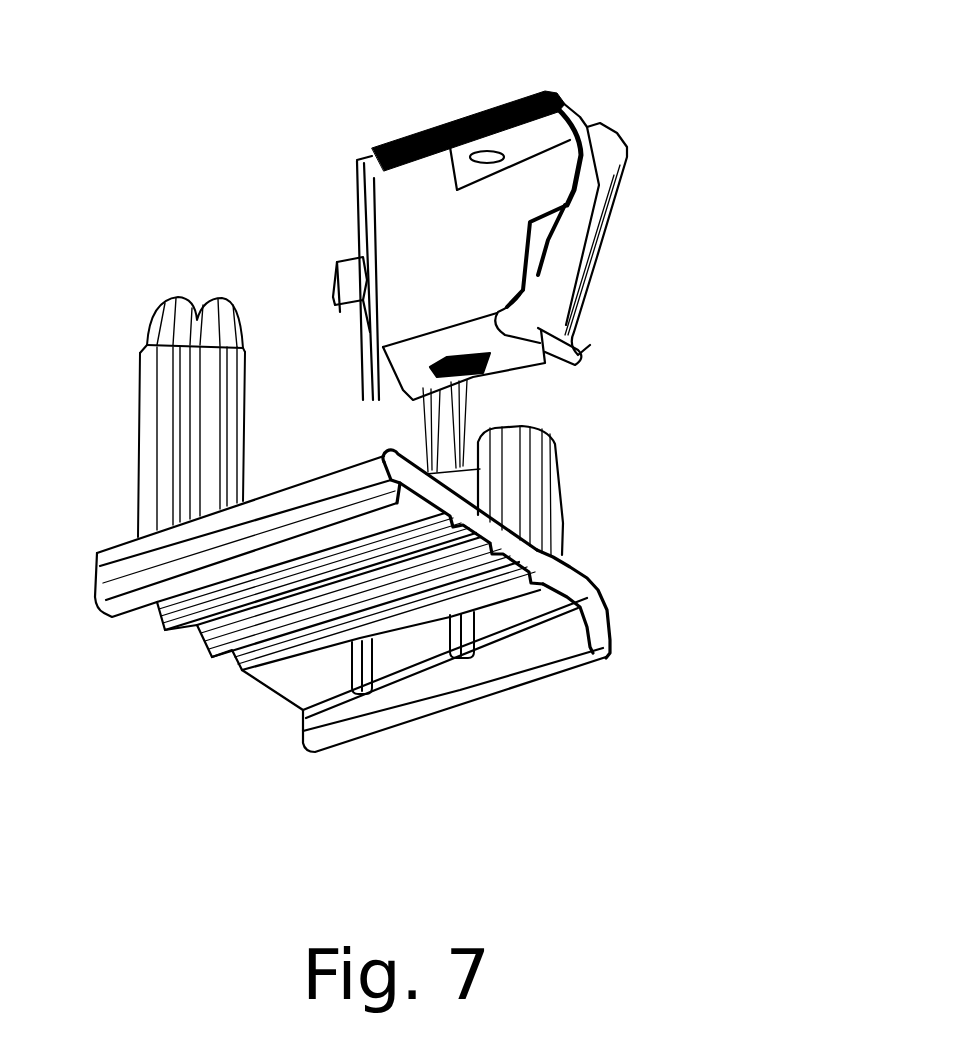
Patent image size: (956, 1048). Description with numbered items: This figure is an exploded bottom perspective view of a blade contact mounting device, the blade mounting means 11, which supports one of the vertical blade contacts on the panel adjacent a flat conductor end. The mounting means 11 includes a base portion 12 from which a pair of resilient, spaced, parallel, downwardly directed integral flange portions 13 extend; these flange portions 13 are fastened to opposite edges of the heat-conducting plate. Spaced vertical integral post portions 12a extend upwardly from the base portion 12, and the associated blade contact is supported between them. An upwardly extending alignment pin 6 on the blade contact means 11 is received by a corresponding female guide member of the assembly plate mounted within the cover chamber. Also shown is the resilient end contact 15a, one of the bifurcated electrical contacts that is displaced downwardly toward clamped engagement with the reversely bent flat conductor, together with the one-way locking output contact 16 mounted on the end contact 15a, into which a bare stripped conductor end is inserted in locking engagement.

The alignment pin 6 is at (147, 337).
The one-way locking output contact 16 is at (590, 190).
The end contact 15a is at (380, 437).
The post portion 12a is at (550, 440).
The base portion 12 is at (588, 583).
The blade mounting means 11 is at (626, 600).
The flange portion 13 is at (237, 527).